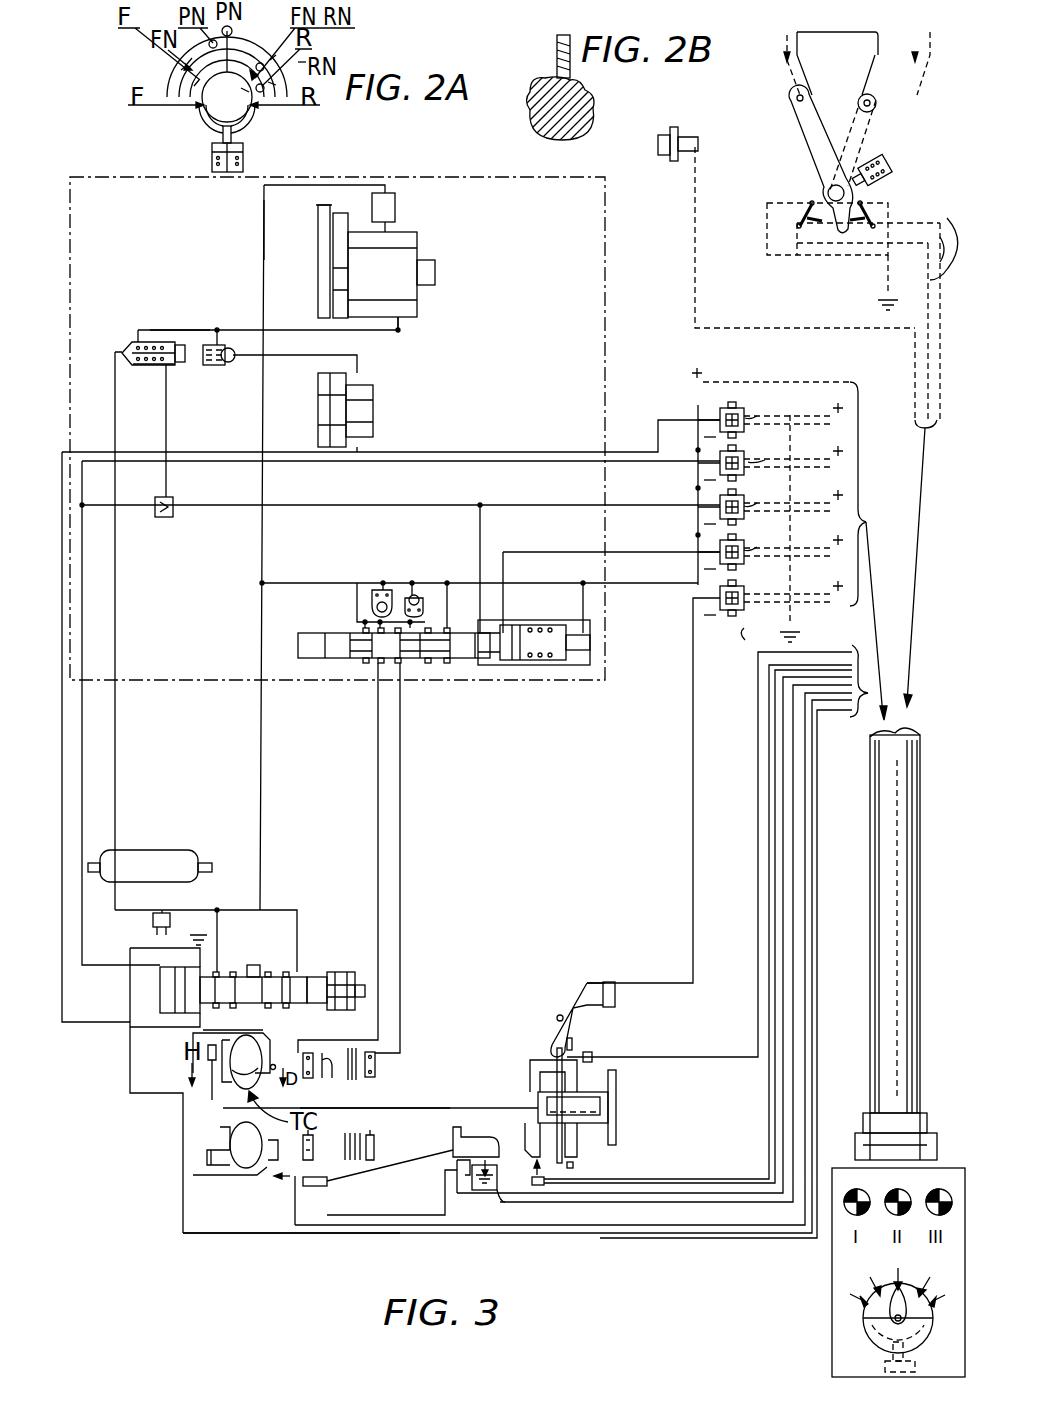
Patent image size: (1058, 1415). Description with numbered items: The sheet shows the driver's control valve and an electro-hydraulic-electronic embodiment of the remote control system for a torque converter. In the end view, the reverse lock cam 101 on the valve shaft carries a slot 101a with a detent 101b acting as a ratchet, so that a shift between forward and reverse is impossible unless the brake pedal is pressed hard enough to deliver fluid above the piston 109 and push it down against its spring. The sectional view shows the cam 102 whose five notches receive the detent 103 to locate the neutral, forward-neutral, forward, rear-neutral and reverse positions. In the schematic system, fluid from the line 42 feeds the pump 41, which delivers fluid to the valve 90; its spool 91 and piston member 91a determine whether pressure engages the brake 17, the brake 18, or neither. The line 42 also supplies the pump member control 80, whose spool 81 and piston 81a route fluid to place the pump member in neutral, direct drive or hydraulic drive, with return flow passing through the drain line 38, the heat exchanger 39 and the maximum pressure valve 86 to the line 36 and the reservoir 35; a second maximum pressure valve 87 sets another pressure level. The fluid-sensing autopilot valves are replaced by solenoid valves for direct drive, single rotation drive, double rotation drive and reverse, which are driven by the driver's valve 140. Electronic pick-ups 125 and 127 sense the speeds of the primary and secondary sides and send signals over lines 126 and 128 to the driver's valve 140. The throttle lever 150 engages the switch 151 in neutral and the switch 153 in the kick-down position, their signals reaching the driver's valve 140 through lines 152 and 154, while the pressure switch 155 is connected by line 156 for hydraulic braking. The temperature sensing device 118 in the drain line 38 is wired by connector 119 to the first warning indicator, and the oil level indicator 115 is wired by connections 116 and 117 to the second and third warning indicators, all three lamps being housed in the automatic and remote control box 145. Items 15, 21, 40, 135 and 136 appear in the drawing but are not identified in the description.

In FIG. 2A, the reverse lock cam 101 is at (242, 106).
In FIG. 2A, the slot 101a is at (204, 121).
In FIG. 2A, the detent 101b is at (250, 121).
In FIG. 2A, the piston 109 is at (243, 158).
In FIG. 2B, the cam 102 is at (578, 116).
In FIG. 2B, the detent 103 is at (557, 62).
In FIG. 3, the main pressure line 15 is at (447, 1108).
In FIG. 3, the brake 17 is at (323, 1079).
In FIG. 3, the brake 18 is at (377, 1065).
In FIG. 3, the range shift cylinder 21 is at (624, 1110).
In FIG. 3, the reservoir 35 is at (385, 357).
In FIG. 3, the line 36 is at (192, 328).
In FIG. 3, the drain line 38 is at (112, 382).
In FIG. 3, the heat exchanger 39 is at (150, 850).
In FIG. 3, the pump motor 40 is at (398, 289).
In FIG. 3, the pump 41 is at (373, 420).
In FIG. 3, the line 42 is at (264, 240).
In FIG. 3, the pump member control 80 is at (307, 970).
In FIG. 3, the spool 81 is at (279, 977).
In FIG. 3, the piston 81a is at (160, 990).
In FIG. 3, the maximum pressure valve 86 is at (147, 366).
In FIG. 3, the maximum pressure valve 87 is at (220, 366).
In FIG. 3, the valve 90 is at (565, 686).
In FIG. 3, the spool 91 is at (472, 660).
In FIG. 3, the piston member 91a is at (516, 665).
In FIG. 3, the oil level indicator 115 is at (462, 1135).
In FIG. 3, the electrical connection 116 is at (652, 1195).
In FIG. 3, the electrical connection 117 is at (722, 1204).
In FIG. 3, the temperature sensing device 118 is at (172, 918).
In FIG. 3, the electrical connector 119 is at (128, 1052).
In FIG. 3, the electronic pick-up 125 is at (292, 1182).
In FIG. 3, the line 126 is at (418, 1235).
In FIG. 3, the electronic pick-up 127 is at (538, 1187).
In FIG. 3, the line 128 is at (718, 1181).
In FIG. 3, the solenoid valve bank 135 is at (783, 382).
In FIG. 3, the ground connection 136 is at (790, 416).
In FIG. 3, the driver's valve 140 is at (863, 1318).
In FIG. 3, the automatic and remote control box 145 is at (840, 1168).
In FIG. 3, the throttle lever 150 is at (803, 138).
In FIG. 3, the switch 151 is at (866, 210).
In FIG. 3, the line 152 is at (949, 236).
In FIG. 3, the switch 153 is at (810, 205).
In FIG. 3, the line 154 is at (822, 252).
In FIG. 3, the pressure switch 155 is at (660, 157).
In FIG. 3, the line 156 is at (695, 232).